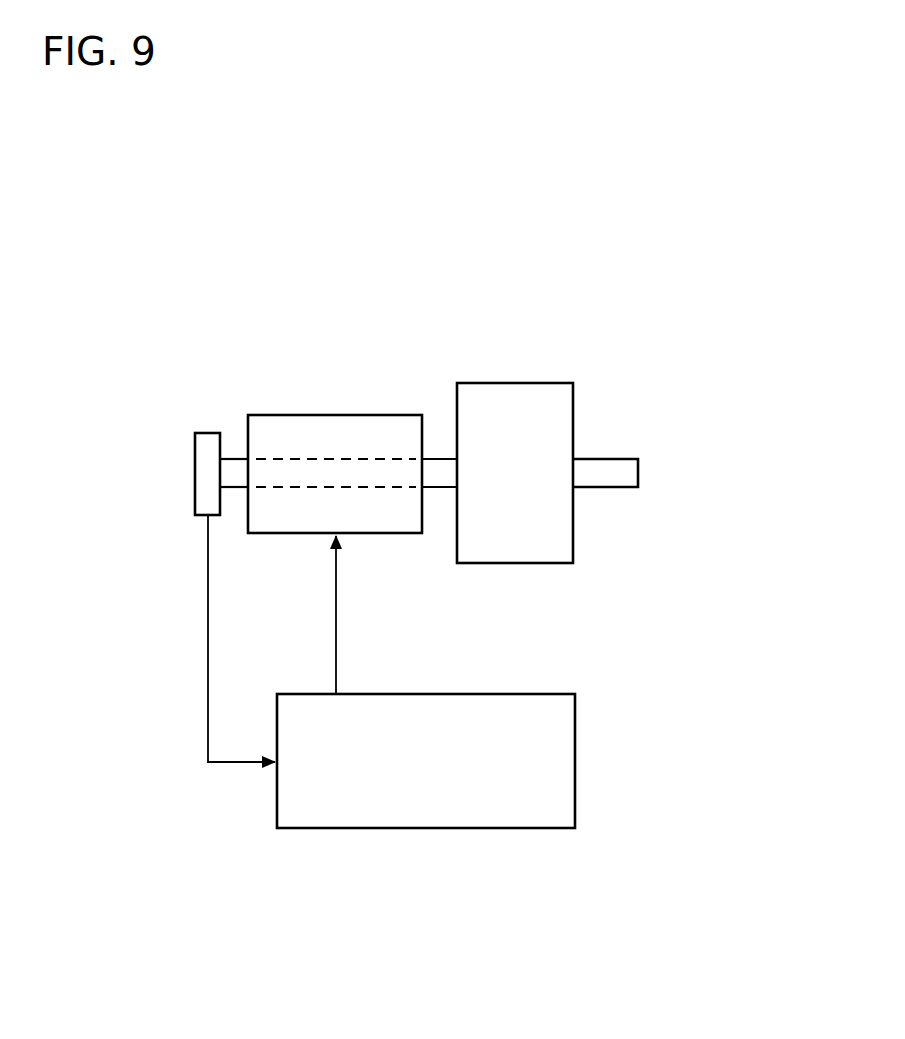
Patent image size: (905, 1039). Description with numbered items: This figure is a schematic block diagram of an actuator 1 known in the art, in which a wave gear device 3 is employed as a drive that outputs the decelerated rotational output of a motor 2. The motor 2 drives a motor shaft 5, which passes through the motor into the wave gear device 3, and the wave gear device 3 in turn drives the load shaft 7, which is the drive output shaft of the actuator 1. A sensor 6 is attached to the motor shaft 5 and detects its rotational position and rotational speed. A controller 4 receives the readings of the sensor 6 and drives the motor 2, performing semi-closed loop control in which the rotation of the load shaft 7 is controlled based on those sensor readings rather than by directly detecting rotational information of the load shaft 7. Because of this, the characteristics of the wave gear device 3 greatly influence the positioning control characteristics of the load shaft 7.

The actuator 1 is at (598, 297).
The motor 2 is at (305, 413).
The wave gear device 3 is at (512, 383).
The controller 4 is at (533, 688).
The motor shaft 5 is at (362, 467).
The sensor 6 is at (205, 430).
The load shaft 7 is at (618, 442).